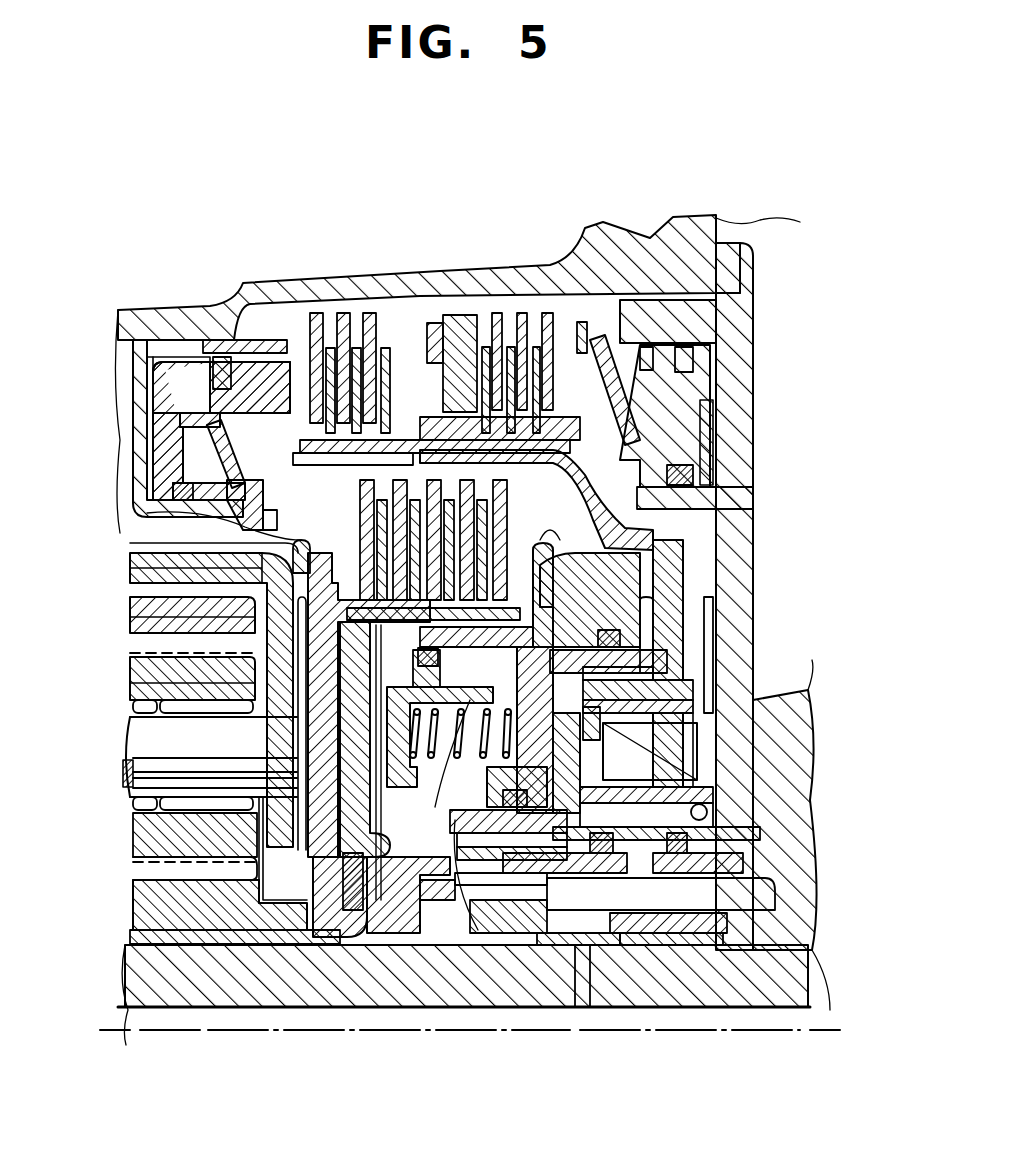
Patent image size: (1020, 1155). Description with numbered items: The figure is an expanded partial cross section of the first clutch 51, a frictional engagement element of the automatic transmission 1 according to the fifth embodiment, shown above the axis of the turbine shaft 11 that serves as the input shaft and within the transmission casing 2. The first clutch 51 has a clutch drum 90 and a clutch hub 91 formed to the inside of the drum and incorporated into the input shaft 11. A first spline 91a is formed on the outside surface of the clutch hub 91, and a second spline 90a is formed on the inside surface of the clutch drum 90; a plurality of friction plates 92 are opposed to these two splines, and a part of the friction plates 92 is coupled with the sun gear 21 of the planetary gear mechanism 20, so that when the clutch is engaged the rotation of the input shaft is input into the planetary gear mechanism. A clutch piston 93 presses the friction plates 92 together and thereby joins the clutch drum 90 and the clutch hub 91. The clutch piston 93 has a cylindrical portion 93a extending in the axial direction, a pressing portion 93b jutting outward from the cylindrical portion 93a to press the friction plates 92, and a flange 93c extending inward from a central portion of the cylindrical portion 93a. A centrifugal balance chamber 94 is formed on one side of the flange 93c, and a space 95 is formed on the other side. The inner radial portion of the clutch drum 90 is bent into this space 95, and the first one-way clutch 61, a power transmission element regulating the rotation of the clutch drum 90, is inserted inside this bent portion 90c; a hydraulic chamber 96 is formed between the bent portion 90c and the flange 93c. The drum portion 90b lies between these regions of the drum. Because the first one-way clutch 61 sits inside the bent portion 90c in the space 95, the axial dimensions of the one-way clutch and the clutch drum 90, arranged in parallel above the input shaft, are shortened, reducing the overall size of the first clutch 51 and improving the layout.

The transmission 1 is at (345, 268).
The transmission casing 2 is at (615, 235).
The turbine shaft 11 is at (672, 990).
The planetary gear mechanism 20 is at (125, 825).
The sun gear 21 is at (150, 905).
The first clutch 51 is at (415, 405).
The first one-way clutch 61 is at (680, 757).
The clutch drum 90 is at (680, 503).
The second spline 90a is at (255, 466).
The drum cylinder portion 90b is at (690, 625).
The bent portion 90c is at (730, 680).
The clutch hub 91 is at (355, 640).
The first spline 91a is at (340, 600).
The friction plates 92 is at (320, 545).
The clutch piston 93 is at (612, 570).
The cylindrical portion 93a is at (410, 678).
The pressing portion 93b is at (690, 545).
The flange 93c is at (440, 930).
The centrifugal balance chamber 94 is at (357, 925).
The space 95 is at (700, 655).
The hydraulic chamber 96 is at (545, 860).